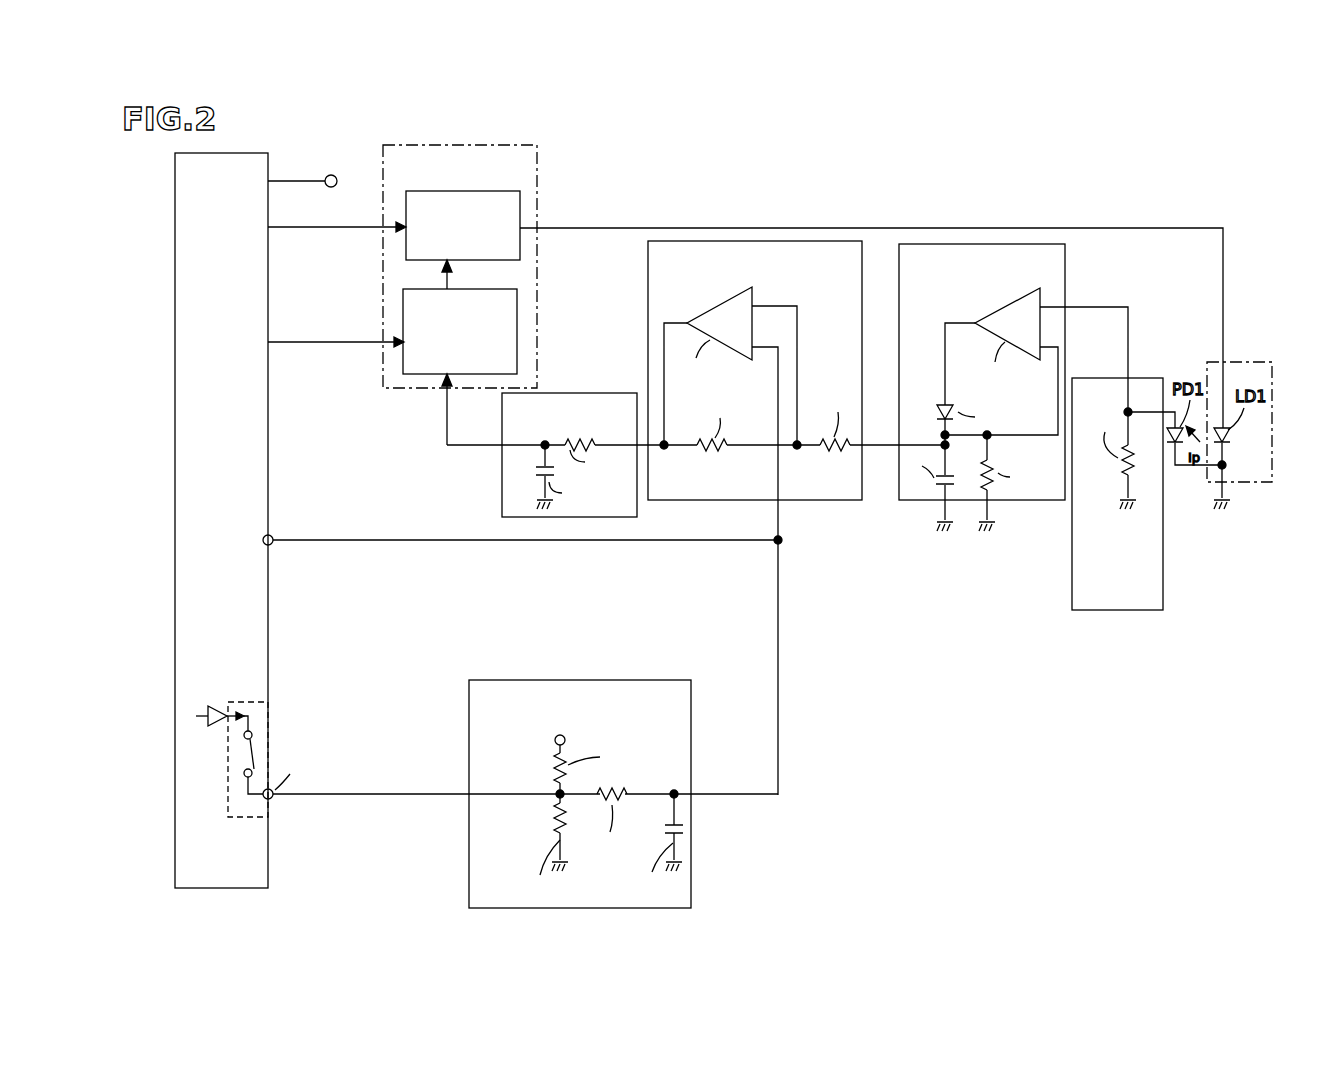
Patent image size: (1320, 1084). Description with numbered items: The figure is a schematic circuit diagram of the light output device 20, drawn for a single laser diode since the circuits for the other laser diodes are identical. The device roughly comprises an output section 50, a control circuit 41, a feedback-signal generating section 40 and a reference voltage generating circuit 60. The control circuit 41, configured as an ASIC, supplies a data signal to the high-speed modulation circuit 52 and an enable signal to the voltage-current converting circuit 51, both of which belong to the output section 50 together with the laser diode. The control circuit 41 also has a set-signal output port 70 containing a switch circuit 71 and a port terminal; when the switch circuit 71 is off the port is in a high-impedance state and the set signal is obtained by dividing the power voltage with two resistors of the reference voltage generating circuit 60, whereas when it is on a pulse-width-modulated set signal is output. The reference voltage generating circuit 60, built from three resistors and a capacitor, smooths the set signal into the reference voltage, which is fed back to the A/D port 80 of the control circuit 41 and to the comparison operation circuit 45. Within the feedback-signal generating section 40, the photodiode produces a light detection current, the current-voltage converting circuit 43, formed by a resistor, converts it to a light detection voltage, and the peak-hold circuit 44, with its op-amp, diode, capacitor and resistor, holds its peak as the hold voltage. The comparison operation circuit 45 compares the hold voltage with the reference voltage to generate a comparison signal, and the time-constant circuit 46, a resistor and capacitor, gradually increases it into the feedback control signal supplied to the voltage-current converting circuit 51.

The light output device 20 is at (1046, 692).
The feedback-signal generating section 40 is at (913, 582).
The control circuit 41 is at (229, 153).
The current-voltage converting circuit 43 is at (1128, 612).
The peak-hold circuit 44 is at (1023, 500).
The comparison operation circuit 45 is at (838, 500).
The time-constant circuit 46 is at (593, 393).
The output section 50 is at (537, 178).
The voltage-current converting circuit 51 is at (517, 303).
The high-speed modulation circuit 52 is at (467, 191).
The reference voltage generating circuit 60 is at (469, 842).
The set-signal output port 70 is at (269, 724).
The switch circuit 71 is at (255, 745).
The A/D port 80 is at (271, 536).